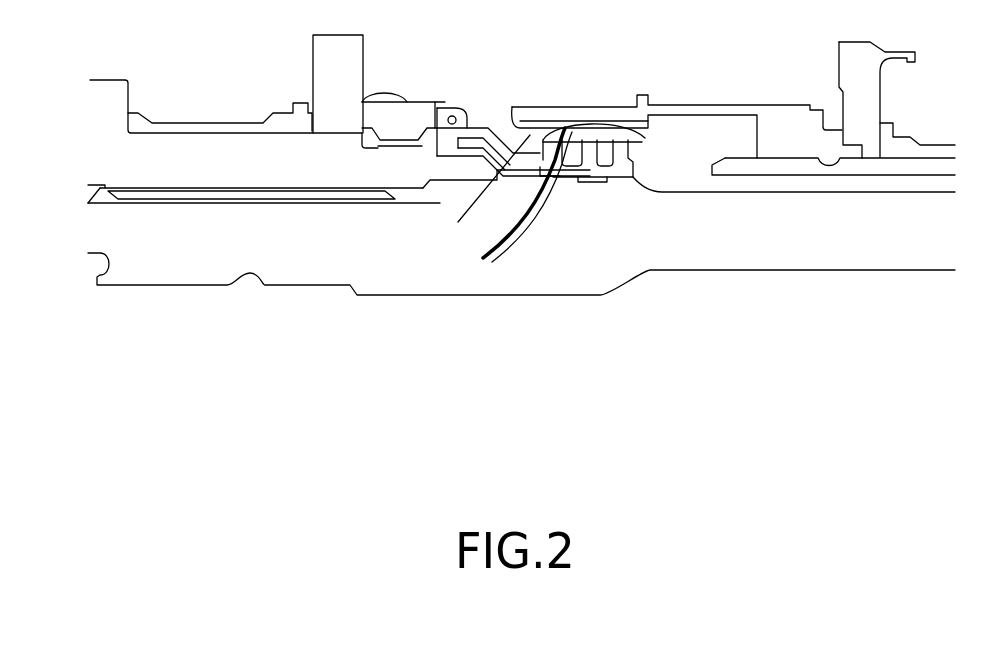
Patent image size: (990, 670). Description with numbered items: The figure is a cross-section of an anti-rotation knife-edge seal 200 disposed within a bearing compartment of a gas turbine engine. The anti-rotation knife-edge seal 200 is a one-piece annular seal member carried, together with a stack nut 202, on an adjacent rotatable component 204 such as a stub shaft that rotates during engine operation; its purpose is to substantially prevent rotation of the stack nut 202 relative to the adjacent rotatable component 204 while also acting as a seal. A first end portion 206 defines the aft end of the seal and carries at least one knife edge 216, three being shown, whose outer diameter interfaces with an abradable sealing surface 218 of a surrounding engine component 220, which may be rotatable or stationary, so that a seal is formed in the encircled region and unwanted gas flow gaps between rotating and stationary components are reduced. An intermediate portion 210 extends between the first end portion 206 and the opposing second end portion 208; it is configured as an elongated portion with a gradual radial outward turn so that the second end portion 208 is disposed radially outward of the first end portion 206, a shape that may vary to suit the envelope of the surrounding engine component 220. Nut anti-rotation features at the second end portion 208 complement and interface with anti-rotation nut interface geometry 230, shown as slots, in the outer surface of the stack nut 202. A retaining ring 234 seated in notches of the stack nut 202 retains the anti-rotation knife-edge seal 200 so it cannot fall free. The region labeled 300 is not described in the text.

The anti-rotation knife-edge seal 200 is at (496, 117).
The stack nut 202 is at (372, 95).
The adjacent rotatable component 204 is at (480, 168).
The first end portion 206 is at (633, 180).
The second end portion 208 is at (476, 120).
The intermediate portion 210 is at (506, 177).
The knife edge 216 is at (507, 203).
The abradable sealing surface 218 is at (483, 192).
The surrounding engine component 220 is at (510, 112).
The anti-rotation nut interface geometry 230 is at (433, 103).
The retaining ring 234 is at (452, 115).
The electrical connector 300 is at (645, 135).